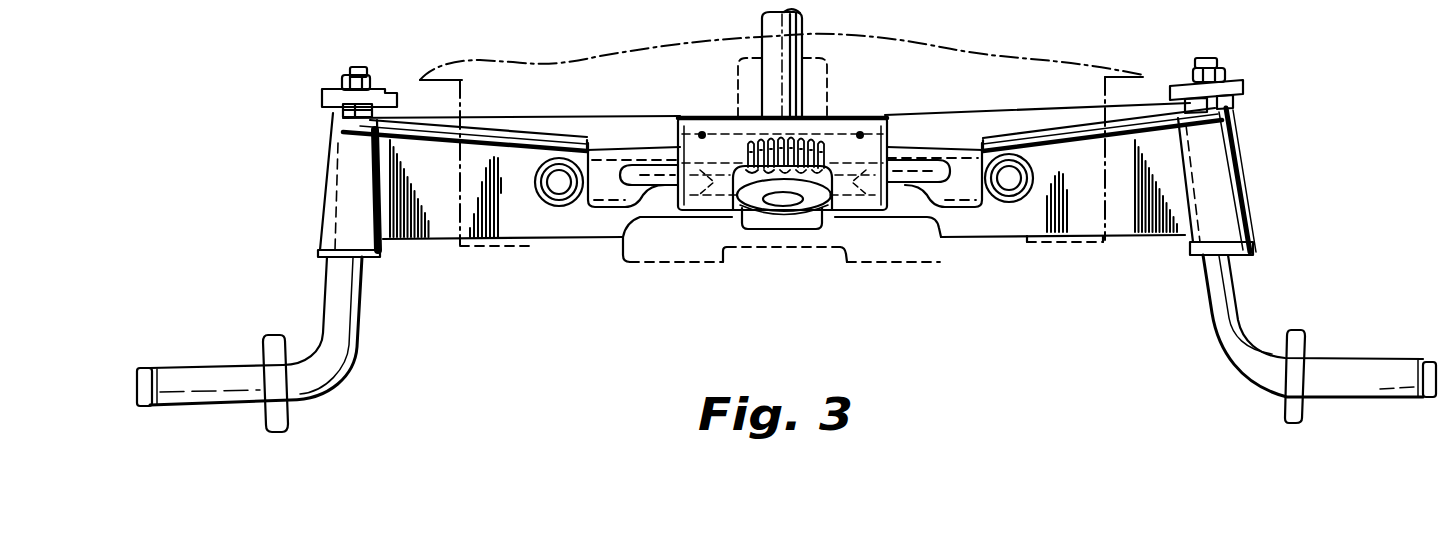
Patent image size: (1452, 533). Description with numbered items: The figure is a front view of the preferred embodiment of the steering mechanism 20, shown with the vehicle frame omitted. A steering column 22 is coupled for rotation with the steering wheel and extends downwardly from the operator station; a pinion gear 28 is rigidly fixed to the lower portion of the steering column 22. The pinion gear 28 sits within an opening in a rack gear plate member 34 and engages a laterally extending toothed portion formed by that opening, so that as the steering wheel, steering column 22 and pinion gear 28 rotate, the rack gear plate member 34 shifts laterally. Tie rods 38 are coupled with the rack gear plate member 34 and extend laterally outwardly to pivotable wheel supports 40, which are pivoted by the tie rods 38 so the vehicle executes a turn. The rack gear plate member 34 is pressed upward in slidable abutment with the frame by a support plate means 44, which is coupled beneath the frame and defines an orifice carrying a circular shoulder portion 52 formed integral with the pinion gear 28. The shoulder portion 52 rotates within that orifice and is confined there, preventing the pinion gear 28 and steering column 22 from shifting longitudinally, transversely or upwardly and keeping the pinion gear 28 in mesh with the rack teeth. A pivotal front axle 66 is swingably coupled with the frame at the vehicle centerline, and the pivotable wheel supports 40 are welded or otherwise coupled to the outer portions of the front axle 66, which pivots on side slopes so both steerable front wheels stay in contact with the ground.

The steering mechanism 20 is at (694, 282).
The steering column 22 is at (765, 30).
The pinion gear 28 is at (815, 165).
The rack gear plate member 34 is at (1027, 163).
The tie rods 38 is at (497, 128).
The pivotable wheel supports 40 is at (290, 179).
The support plate means 44 is at (703, 115).
The circular shoulder portion 52 is at (833, 172).
The pivotal front axle 66 is at (983, 237).